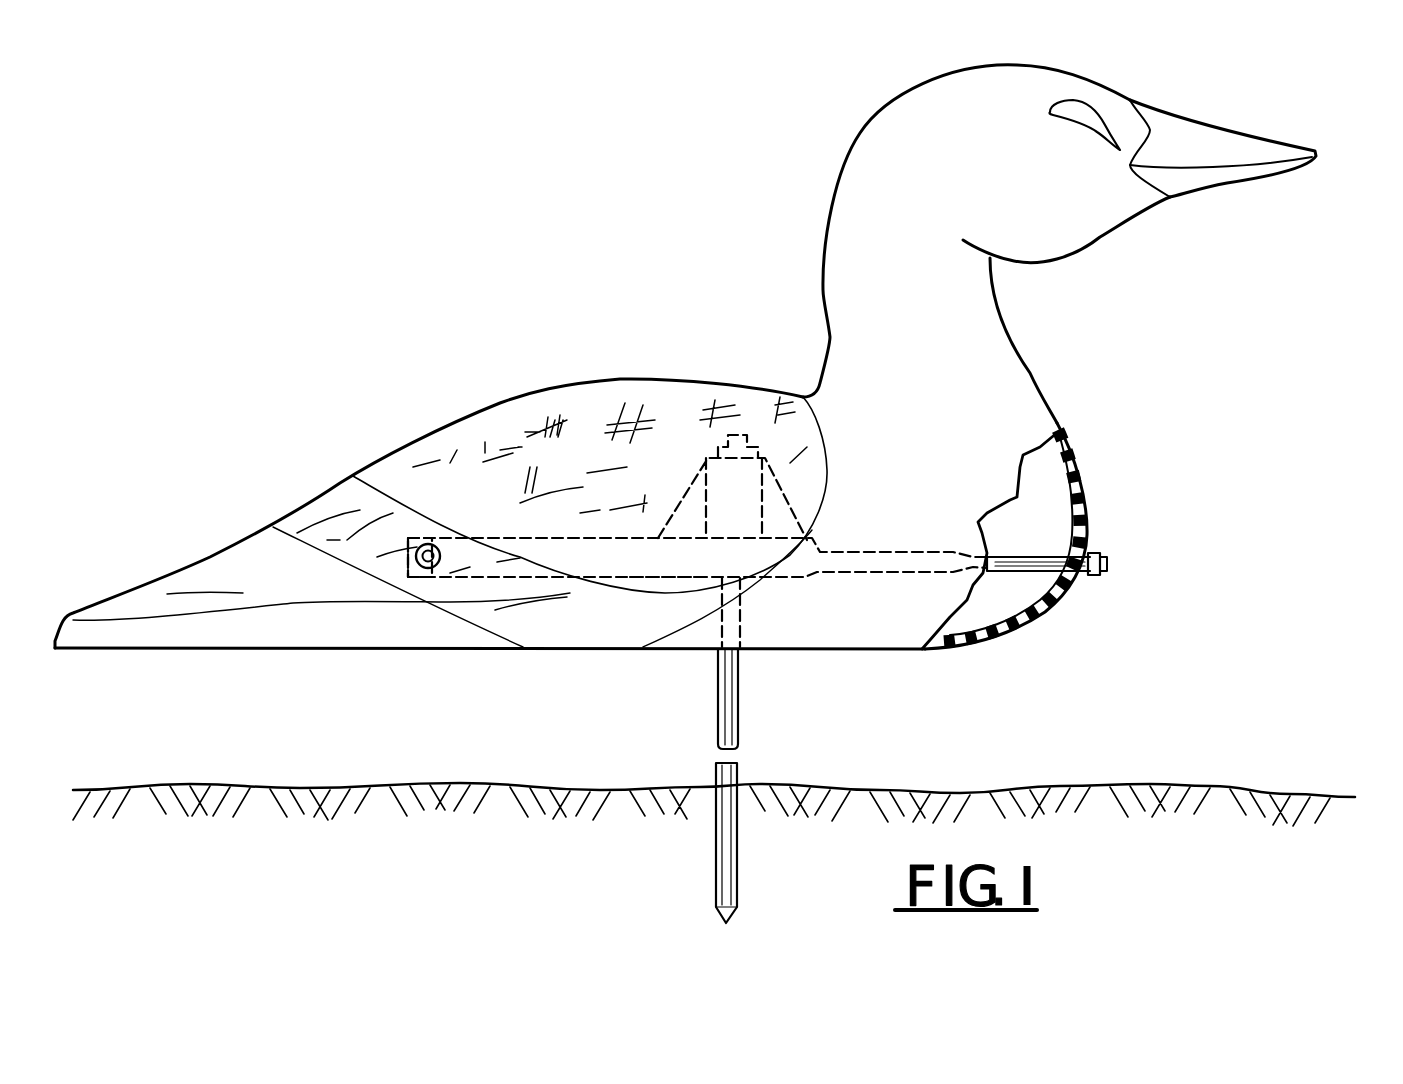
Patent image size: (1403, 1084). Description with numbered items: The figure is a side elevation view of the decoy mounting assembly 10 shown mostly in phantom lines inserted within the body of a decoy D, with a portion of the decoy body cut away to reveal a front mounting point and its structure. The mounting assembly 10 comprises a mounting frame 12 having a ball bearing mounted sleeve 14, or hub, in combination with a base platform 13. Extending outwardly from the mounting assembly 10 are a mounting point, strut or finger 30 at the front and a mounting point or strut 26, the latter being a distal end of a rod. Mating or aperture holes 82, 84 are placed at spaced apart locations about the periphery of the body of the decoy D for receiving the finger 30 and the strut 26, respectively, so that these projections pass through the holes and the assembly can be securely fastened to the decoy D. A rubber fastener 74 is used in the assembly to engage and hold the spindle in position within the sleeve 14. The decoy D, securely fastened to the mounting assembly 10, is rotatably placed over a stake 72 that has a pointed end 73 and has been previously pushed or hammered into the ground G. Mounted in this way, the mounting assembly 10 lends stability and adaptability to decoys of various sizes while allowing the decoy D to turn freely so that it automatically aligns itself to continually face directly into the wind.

The decoy mounting assembly 10 is at (548, 382).
The mounting frame 12 is at (568, 578).
The base platform 13 is at (662, 578).
The ball bearing mounted sleeve 14 is at (705, 497).
The mounting point or strut 26 is at (415, 552).
The mounting point, strut or finger 30 is at (1103, 562).
The stake 72 is at (738, 702).
The pointed end 73 is at (718, 915).
The rubber fastener 74 is at (1093, 552).
The mating or aperture hole 82 is at (1057, 566).
The mating or aperture hole 84 is at (425, 568).
The decoy D is at (1036, 378).
The ground G is at (903, 791).